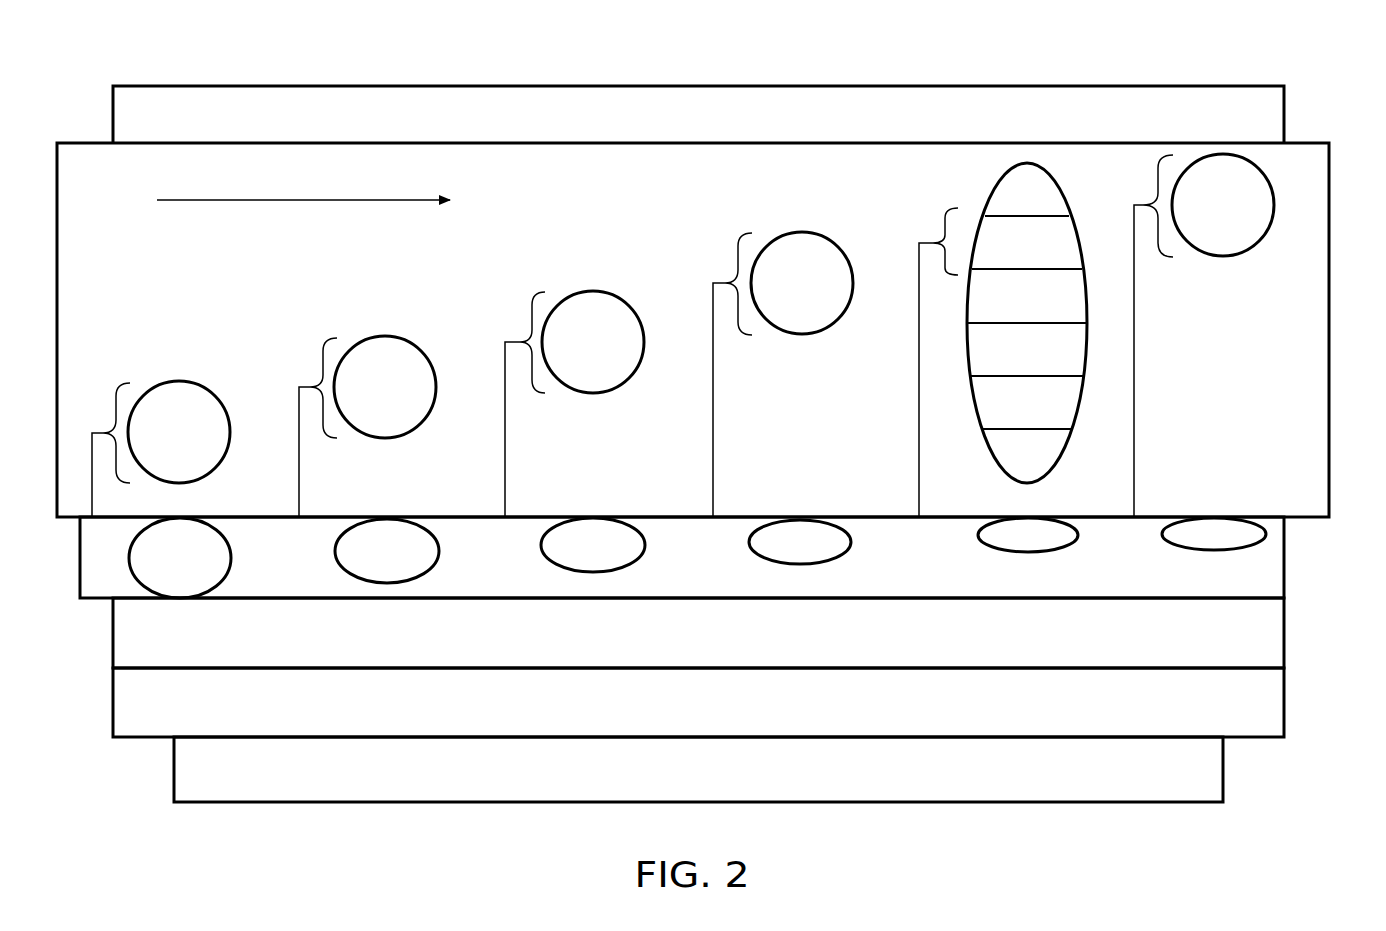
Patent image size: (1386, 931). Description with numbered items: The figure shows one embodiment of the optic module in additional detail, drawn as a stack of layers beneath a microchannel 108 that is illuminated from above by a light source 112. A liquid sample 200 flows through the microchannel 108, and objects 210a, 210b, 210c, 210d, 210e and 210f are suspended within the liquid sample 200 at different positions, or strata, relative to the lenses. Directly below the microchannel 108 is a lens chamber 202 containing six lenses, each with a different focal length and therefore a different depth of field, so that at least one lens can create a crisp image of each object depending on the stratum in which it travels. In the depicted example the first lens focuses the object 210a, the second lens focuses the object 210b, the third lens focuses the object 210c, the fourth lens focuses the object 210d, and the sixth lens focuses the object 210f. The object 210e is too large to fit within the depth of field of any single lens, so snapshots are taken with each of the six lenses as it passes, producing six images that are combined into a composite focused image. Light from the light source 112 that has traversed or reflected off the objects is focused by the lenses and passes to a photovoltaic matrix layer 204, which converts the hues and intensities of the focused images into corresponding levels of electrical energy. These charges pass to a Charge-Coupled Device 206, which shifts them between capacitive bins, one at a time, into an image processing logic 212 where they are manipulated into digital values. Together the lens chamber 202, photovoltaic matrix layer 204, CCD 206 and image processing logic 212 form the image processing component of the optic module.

The light source 112 is at (675, 86).
The microchannel 108 is at (562, 143).
The liquid sample 200 is at (185, 277).
The object 210a is at (208, 444).
The object 210b is at (414, 399).
The object 210c is at (622, 354).
The object 210d is at (831, 295).
The object 210e is at (968, 195).
The object 210f is at (1250, 217).
The lens chamber 202 is at (1284, 575).
The photovoltaic matrix layer 204 is at (1284, 628).
The Charge-Coupled Device (CCD) 206 is at (1284, 698).
The image processing logic 212 is at (1223, 767).